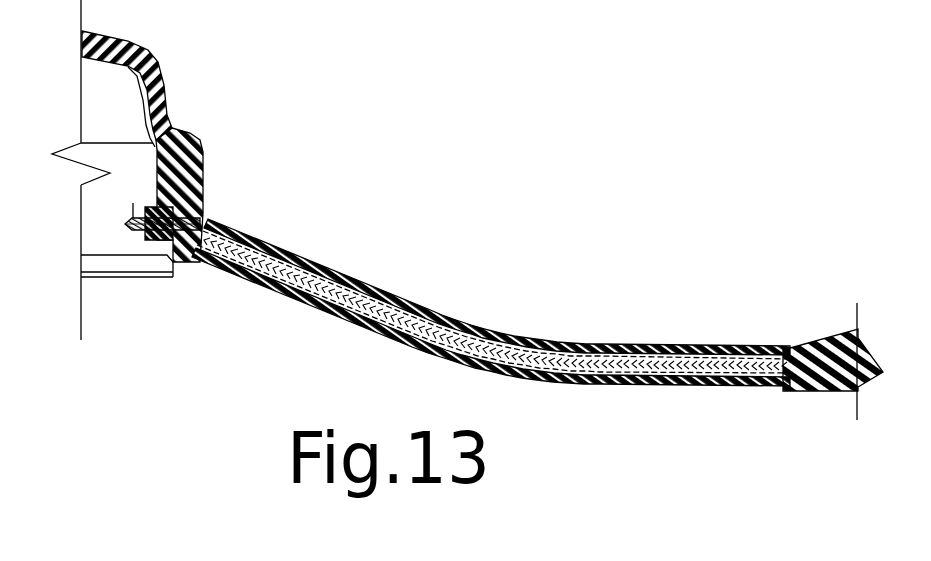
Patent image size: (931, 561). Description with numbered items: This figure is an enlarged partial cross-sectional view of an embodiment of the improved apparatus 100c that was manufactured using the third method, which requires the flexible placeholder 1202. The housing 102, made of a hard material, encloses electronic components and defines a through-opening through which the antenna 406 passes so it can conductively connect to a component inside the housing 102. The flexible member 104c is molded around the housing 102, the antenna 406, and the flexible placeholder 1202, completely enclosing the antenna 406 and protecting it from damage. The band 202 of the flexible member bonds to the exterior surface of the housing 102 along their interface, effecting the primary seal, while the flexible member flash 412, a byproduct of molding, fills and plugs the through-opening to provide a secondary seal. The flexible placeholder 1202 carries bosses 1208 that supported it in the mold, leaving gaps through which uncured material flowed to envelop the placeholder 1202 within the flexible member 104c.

The housing 102 is at (160, 113).
The band 202 is at (200, 184).
The improved apparatus 100c is at (504, 268).
The antenna 406 is at (133, 226).
The flexible member flash 412 is at (158, 243).
The bosses 1208 is at (224, 260).
The flexible member 104c is at (683, 343).
The flexible placeholder 1202 is at (748, 389).